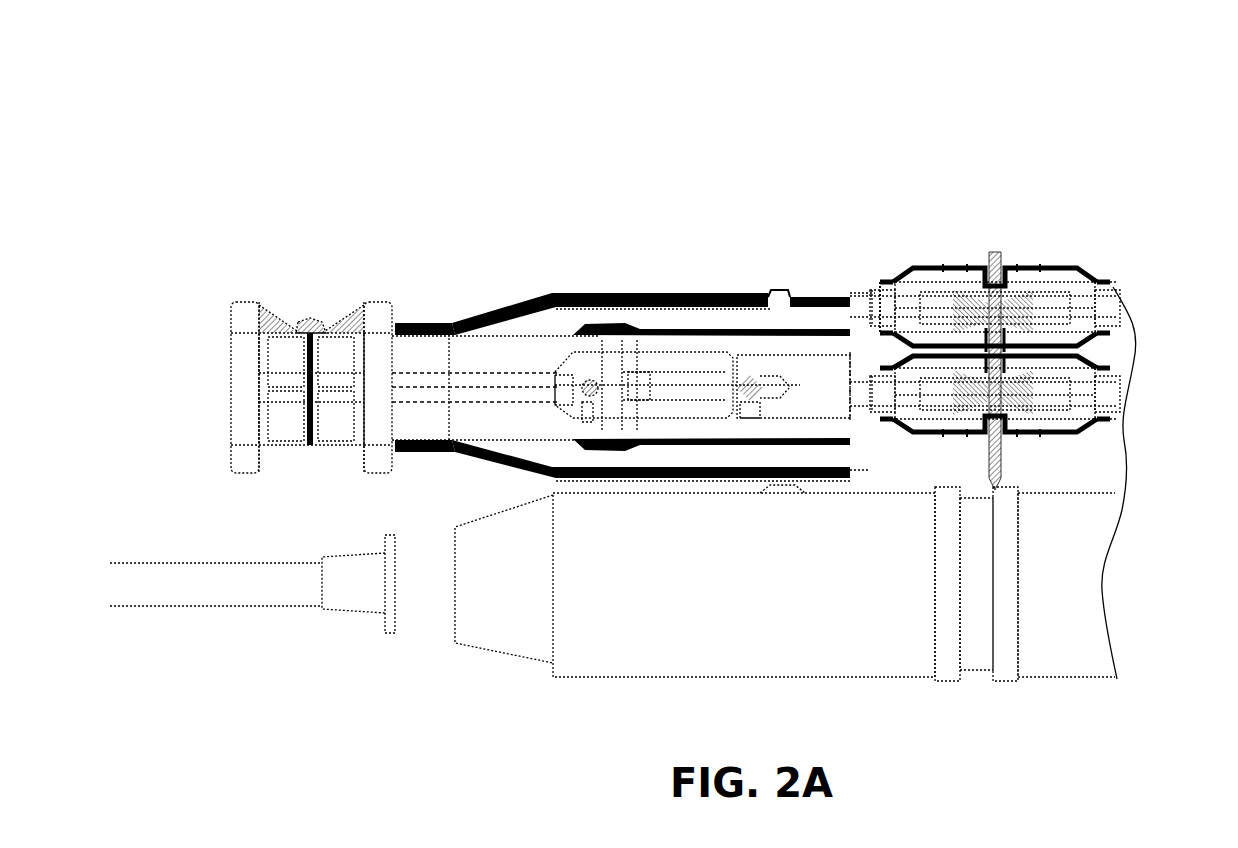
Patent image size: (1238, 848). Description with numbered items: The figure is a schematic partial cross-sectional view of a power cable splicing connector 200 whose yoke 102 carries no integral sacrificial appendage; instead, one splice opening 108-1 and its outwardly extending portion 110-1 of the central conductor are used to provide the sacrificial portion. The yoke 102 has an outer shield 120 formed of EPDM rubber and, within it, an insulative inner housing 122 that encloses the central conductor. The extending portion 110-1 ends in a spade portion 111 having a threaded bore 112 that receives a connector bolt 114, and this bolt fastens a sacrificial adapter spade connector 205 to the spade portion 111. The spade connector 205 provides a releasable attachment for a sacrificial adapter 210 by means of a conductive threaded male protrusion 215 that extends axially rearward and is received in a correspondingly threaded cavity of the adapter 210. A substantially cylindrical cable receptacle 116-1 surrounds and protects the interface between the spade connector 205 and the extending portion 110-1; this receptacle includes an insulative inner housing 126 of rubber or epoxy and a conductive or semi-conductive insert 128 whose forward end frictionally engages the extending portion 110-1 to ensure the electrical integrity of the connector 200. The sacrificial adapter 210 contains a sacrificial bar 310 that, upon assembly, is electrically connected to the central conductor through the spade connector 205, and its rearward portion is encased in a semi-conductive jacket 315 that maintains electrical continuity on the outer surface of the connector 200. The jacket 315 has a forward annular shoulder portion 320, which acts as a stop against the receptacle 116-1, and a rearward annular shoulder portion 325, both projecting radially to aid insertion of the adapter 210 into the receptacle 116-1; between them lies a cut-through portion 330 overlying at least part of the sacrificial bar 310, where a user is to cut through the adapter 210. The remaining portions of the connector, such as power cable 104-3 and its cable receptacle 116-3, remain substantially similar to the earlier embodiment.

The power cable splicing connector 200 is at (993, 354).
The splice opening 108-1 is at (1063, 326).
The cable receptacle 116-1 is at (755, 333).
The cut-through portion 330 is at (332, 330).
The sacrificial adapter 210 is at (422, 338).
The semi-conductive jacket 315 is at (236, 362).
The threaded male protrusion 215 is at (700, 385).
The insulative inner housing 126 is at (708, 318).
The spade portion 111 is at (903, 401).
The threaded bore 112 is at (862, 392).
The connector bolt 114 is at (902, 332).
The outwardly extending portion 110-1 is at (964, 372).
The outer shield 120 is at (1122, 338).
The yoke 102 is at (1122, 434).
The insulative inner housing 122 is at (1090, 350).
The sacrificial adapter spade connector 205 is at (793, 386).
The insert 128 is at (728, 440).
The sacrificial bar 310 is at (498, 396).
The rearward annular shoulder portion 325 is at (241, 465).
The forward annular shoulder portion 320 is at (375, 467).
The power cable 104-3 is at (254, 597).
The cable receptacle 116-3 is at (660, 672).